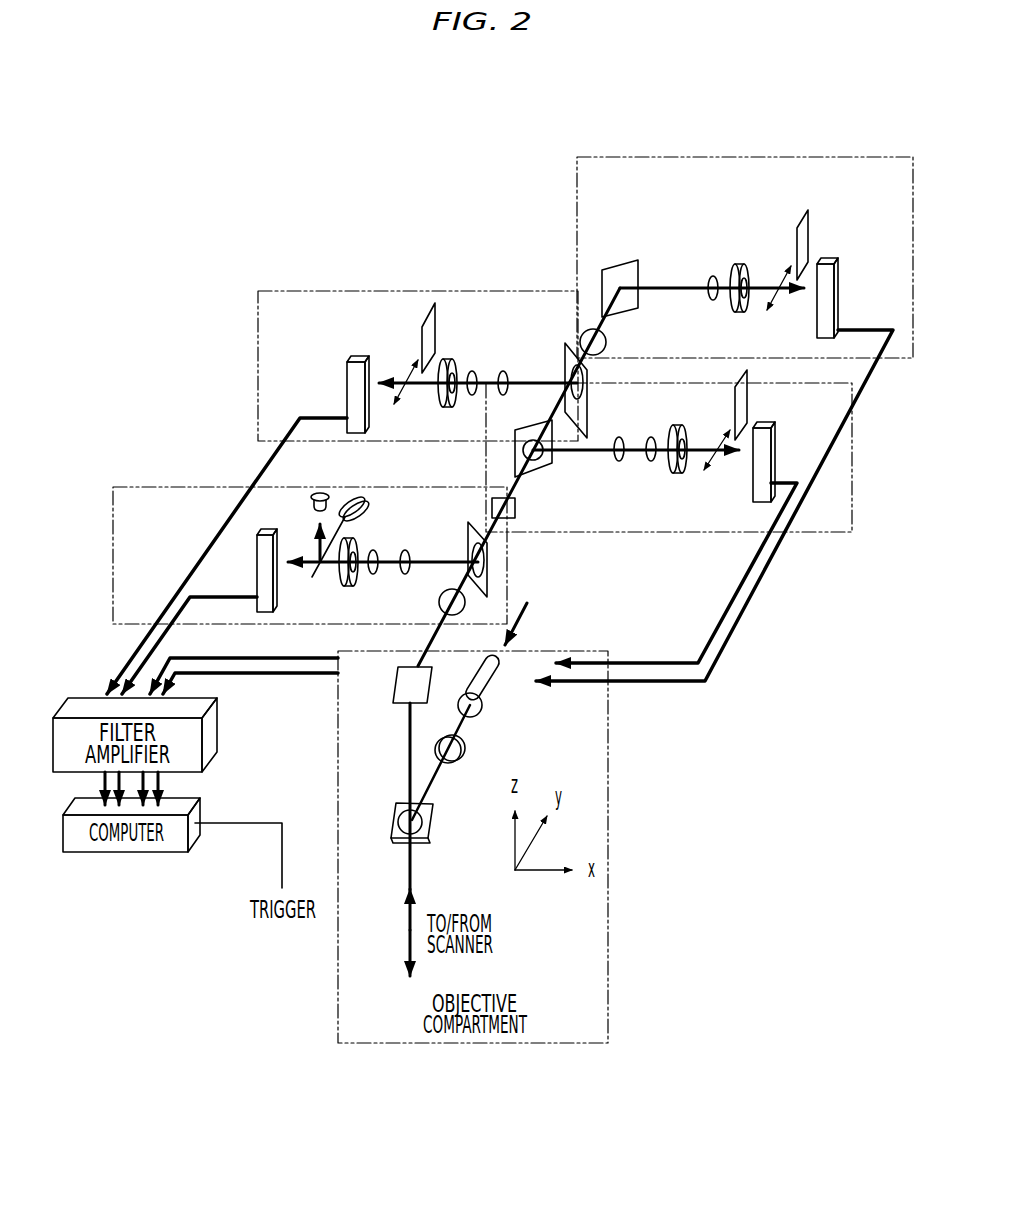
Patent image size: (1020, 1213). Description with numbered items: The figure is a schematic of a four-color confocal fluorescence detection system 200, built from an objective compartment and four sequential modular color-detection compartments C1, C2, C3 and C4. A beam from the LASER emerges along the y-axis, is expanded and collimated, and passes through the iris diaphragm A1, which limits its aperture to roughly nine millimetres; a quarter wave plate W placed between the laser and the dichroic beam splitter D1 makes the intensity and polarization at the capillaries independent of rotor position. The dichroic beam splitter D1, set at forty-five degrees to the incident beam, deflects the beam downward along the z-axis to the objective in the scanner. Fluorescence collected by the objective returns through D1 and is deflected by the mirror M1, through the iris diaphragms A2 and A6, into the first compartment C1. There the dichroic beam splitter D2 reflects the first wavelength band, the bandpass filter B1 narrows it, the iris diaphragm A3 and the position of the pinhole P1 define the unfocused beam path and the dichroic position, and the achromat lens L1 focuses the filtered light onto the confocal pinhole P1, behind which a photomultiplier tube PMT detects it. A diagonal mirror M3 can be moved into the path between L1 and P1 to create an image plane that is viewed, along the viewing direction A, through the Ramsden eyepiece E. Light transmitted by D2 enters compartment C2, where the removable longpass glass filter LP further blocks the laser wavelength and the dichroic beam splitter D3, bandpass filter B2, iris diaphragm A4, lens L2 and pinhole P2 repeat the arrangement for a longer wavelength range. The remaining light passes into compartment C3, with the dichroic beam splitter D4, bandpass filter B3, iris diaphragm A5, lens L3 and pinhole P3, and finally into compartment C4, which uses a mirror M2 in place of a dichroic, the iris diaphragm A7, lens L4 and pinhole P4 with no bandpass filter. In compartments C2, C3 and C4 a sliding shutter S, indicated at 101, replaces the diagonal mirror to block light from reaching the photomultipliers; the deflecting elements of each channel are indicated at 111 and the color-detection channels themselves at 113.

The multi-channel fluorescence detection system 200 is at (210, 455).
The spectral filter plate S 101 is at (618, 340).
The dichroic beam splitter / mirror 111 is at (580, 358).
The detection channel 113 is at (550, 380).
The first color-detection compartment C1 is at (113, 540).
The second color-detection compartment C2 is at (852, 438).
The third color-detection compartment C3 is at (318, 291).
The fourth color-detection compartment C4 is at (686, 157).
The mirror M1 is at (393, 697).
The mirror M2 is at (622, 262).
The diagonal mirror M3 is at (370, 508).
The dichroic beam splitter D1 is at (432, 822).
The dichroic beam splitter D2 is at (490, 560).
The dichroic beam splitter D3 is at (552, 462).
The dichroic beam splitter D4 is at (588, 410).
The achromat lens L1 is at (349, 575).
The achromat lens L2 is at (677, 475).
The achromat lens L3 is at (440, 400).
The achromat lens L4 is at (733, 312).
The confocal pinhole P1 is at (280, 595).
The confocal pinhole P2 is at (753, 478).
The confocal pinhole P3 is at (358, 433).
The confocal pinhole P4 is at (817, 320).
The iris diaphragm A1 is at (483, 705).
The iris diaphragm A2 is at (462, 612).
The iris diaphragm A3 is at (374, 575).
The iris diaphragm A4 is at (651, 462).
The iris diaphragm A5 is at (472, 371).
The iris diaphragm A6 is at (606, 342).
The iris diaphragm A7 is at (713, 276).
The bandpass filter B1 is at (406, 575).
The bandpass filter B2 is at (619, 462).
The bandpass filter B3 is at (503, 371).
The sliding shutter S is at (395, 308).
The quarter wave plate W is at (462, 750).
The Ramsden eyepiece E is at (312, 505).
The viewing arrow A is at (321, 510).
The longpass glass filter LP is at (515, 508).
The photomultiplier tube PMT is at (235, 609).
The laser LASER is at (528, 606).